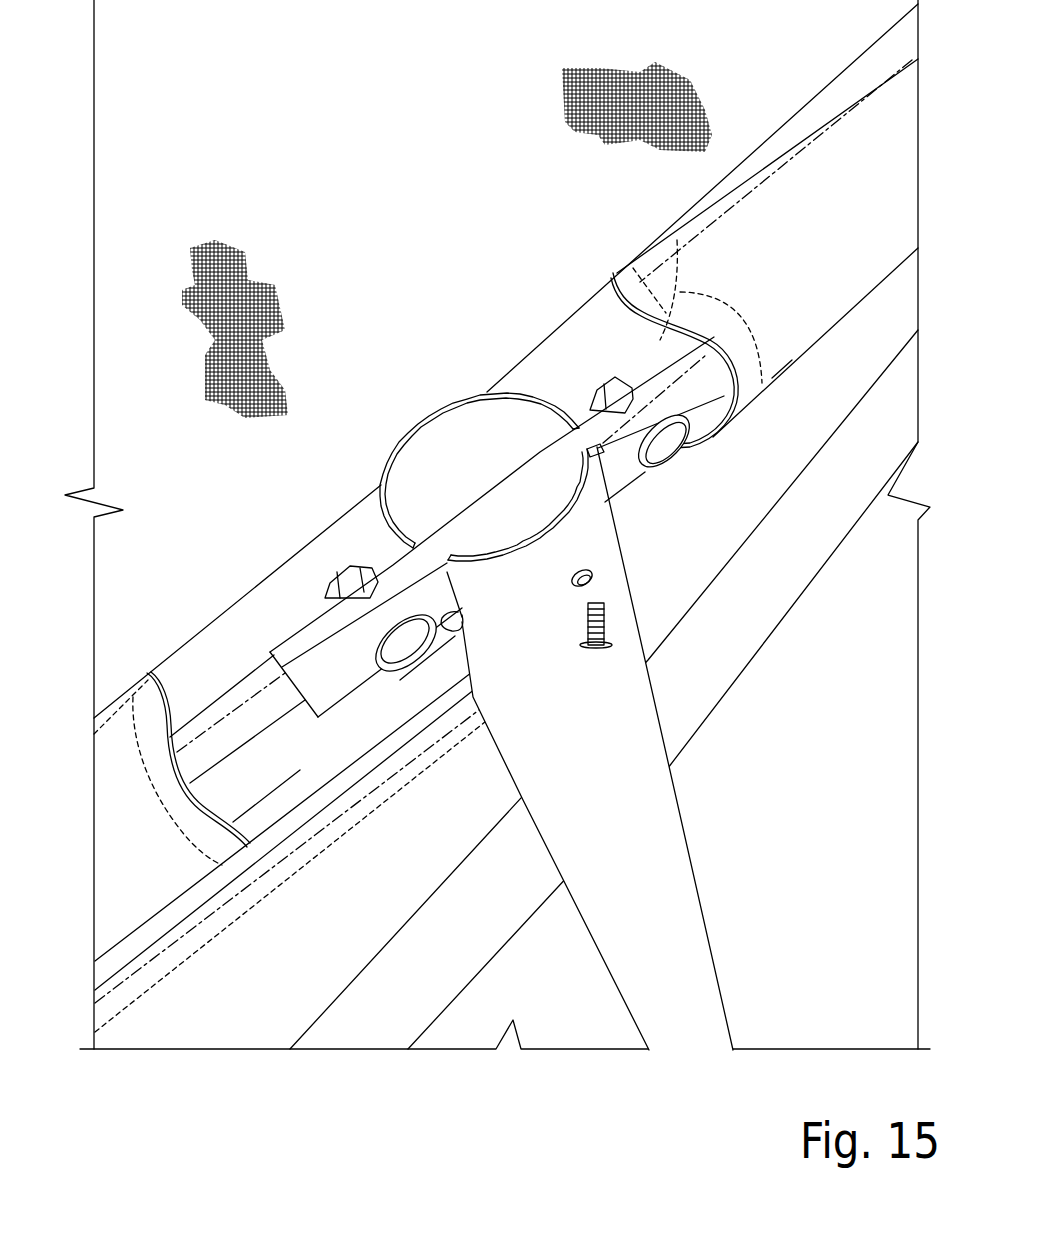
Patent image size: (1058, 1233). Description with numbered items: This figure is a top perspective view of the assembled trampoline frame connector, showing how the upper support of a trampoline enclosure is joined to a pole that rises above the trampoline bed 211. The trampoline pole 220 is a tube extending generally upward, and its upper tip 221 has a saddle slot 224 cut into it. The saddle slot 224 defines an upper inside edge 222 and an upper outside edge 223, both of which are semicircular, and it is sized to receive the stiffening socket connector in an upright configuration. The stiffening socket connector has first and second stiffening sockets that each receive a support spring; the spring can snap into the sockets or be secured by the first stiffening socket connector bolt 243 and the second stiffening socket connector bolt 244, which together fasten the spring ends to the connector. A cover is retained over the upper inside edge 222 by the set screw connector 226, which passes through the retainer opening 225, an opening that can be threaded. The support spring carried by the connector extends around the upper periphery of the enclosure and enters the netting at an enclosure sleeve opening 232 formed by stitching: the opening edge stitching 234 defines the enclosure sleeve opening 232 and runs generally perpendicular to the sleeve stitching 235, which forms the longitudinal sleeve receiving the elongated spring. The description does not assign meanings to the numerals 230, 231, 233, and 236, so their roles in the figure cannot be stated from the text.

The trampoline bed 211 is at (362, 70).
The trampoline pole 220 is at (697, 968).
The upper tip 221 is at (445, 440).
The upper inside edge 222 is at (393, 488).
The upper outside edge 223 is at (513, 557).
The saddle slot 224 is at (565, 440).
The retainer opening 225 is at (590, 583).
The set screw connector 226 is at (606, 633).
The lower tube 230 is at (175, 1000).
The lower sleeve 231 is at (120, 873).
The enclosure sleeve opening 232 is at (683, 297).
The socket inner rim 233 is at (677, 250).
The opening edge stitching 234 is at (773, 379).
The sleeve stitching 235 is at (770, 167).
The inner tube 236 is at (270, 820).
The first stiffening socket connector bolt 243 is at (423, 657).
The second stiffening socket connector bolt 244 is at (672, 451).